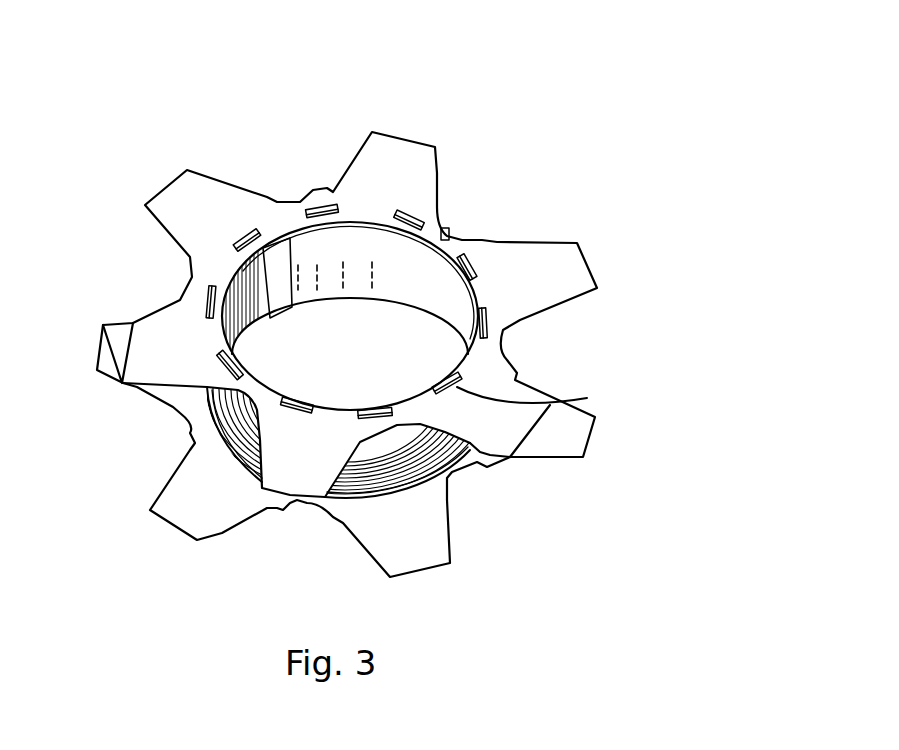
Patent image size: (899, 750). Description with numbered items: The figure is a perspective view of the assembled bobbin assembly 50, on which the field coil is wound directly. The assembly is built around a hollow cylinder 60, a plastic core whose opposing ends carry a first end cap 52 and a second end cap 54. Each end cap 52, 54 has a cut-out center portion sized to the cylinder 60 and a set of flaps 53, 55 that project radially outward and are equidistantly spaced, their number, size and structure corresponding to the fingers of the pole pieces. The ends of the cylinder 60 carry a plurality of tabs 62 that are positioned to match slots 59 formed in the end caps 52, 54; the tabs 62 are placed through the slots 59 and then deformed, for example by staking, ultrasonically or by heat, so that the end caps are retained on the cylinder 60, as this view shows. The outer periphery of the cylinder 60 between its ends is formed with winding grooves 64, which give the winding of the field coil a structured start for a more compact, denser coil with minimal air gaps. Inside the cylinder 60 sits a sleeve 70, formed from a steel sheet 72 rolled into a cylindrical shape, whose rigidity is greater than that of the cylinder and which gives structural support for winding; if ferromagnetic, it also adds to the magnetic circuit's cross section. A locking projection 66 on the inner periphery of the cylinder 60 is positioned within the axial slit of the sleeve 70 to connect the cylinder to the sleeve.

The bobbin assembly 50 is at (593, 116).
The first end cap 52 is at (497, 242).
The flaps 53 is at (157, 190).
The second end cap 54 is at (222, 533).
The flaps 55 is at (97, 362).
The slots 59 is at (540, 405).
The hollow cylinder 60 is at (418, 461).
The tabs 62 is at (413, 210).
The winding grooves 64 is at (383, 457).
The locking projection 66 is at (273, 279).
The sleeve 70 is at (303, 215).
The steel sheet 72 is at (342, 250).